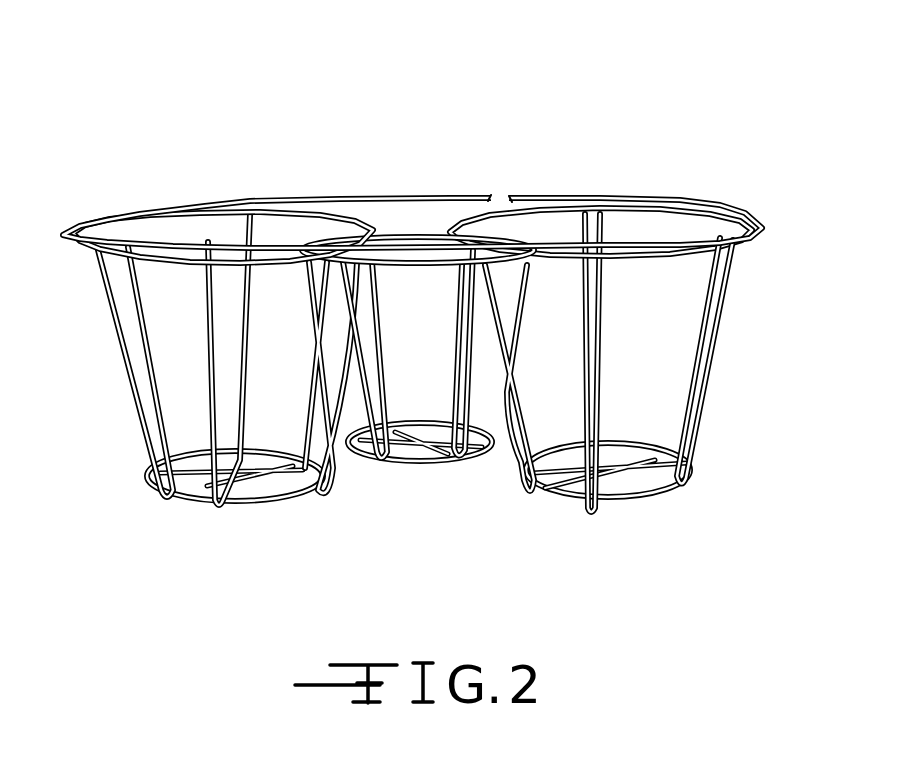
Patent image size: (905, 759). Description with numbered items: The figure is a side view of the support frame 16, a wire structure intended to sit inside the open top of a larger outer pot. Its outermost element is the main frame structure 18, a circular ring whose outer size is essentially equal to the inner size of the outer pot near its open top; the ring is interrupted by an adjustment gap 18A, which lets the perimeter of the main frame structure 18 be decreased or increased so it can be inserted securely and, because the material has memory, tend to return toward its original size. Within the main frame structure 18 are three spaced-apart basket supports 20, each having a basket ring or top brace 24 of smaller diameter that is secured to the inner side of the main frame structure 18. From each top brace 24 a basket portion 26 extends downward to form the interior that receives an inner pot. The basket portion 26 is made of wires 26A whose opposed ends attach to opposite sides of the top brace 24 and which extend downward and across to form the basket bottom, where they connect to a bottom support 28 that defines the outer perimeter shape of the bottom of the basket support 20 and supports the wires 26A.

The support frame 16 is at (499, 122).
The main frame structure 18 is at (675, 200).
The adjustment gap 18A is at (500, 194).
The basket support 20 is at (707, 393).
The top brace 24 is at (325, 196).
The basket portion 26 is at (128, 403).
The wires 26A is at (727, 291).
The bottom support 28 is at (643, 503).